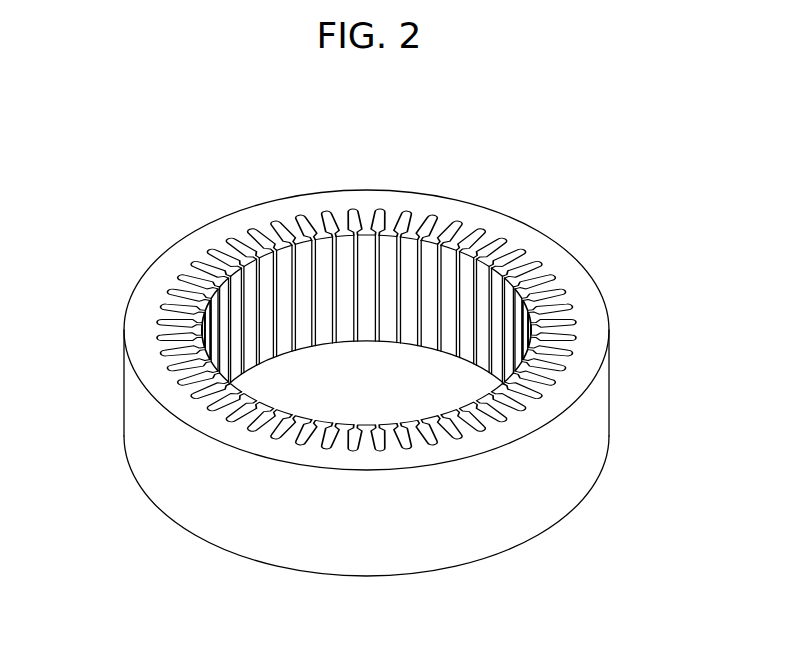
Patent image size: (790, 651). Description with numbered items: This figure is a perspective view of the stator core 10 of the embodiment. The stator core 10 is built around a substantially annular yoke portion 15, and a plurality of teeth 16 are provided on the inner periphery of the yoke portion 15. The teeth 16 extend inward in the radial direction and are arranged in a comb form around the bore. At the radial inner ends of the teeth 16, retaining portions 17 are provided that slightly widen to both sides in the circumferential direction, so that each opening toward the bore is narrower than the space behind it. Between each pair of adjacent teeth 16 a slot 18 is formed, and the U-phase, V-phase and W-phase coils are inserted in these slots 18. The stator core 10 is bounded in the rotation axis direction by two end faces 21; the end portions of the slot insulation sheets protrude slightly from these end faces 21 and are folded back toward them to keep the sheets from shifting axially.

The stator core 10 is at (536, 112).
The yoke portion 15 is at (534, 245).
The teeth 16 is at (183, 327).
The retaining portions 17 is at (303, 216).
The slots 18 is at (250, 231).
The end faces 21 is at (582, 282).